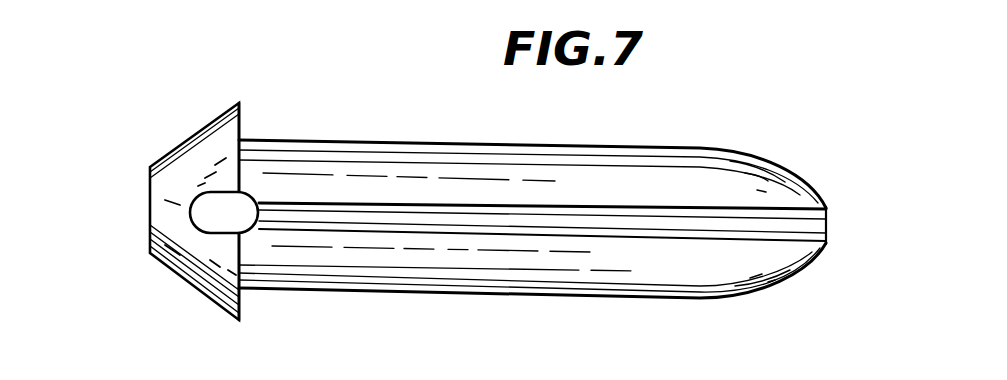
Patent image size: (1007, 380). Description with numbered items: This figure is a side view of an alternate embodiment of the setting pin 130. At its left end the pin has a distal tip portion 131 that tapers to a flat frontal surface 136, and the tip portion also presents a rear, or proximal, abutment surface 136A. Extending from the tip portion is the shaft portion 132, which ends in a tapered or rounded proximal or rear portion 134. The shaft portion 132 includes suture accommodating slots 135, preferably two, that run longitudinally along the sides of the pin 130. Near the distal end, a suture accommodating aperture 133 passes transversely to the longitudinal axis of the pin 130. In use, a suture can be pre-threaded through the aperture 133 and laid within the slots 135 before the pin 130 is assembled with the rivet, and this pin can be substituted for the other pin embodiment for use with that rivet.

The setting pin 130 is at (588, 138).
The distal tip portion 131 is at (153, 156).
The shaft portion 132 is at (443, 142).
The suture accommodating aperture 133 is at (211, 191).
The proximal rear portion 134 is at (827, 200).
The suture accommodating slot 135 is at (713, 206).
The flat frontal surface 136 is at (150, 215).
The proximal abutment surface 136A is at (240, 120).